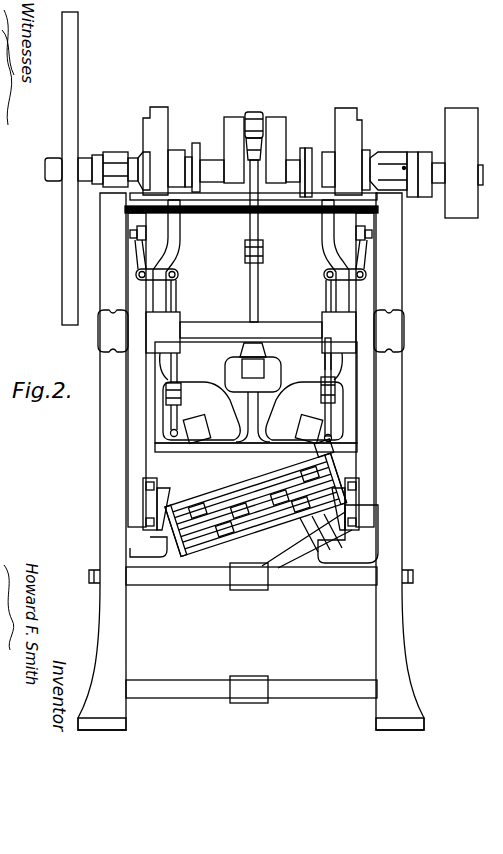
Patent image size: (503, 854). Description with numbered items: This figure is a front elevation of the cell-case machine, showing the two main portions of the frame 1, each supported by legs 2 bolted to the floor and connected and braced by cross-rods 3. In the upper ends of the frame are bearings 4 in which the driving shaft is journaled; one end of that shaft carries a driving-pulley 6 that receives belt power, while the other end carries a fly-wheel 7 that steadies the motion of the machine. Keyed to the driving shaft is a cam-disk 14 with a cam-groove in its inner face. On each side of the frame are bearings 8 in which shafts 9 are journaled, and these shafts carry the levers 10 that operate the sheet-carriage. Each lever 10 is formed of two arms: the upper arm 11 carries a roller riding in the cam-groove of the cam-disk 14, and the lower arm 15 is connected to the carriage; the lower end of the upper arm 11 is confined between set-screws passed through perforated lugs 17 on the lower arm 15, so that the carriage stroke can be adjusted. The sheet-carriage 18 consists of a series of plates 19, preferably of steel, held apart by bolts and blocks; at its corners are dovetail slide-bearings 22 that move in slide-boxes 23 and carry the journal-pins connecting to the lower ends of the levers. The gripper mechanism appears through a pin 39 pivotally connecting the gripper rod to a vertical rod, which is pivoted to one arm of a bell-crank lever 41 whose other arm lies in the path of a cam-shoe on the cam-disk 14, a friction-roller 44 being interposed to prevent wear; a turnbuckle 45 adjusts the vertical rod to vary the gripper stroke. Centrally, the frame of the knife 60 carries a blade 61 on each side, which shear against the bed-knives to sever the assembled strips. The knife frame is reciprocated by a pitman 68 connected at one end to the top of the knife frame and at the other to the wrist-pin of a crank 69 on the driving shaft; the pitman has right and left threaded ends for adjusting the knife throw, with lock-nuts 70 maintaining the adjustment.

The main portion of the frame 1 is at (251, 461).
The leg 2 is at (251, 685).
The cross-rod 3 is at (251, 457).
The bearing 4 is at (255, 164).
The driving-pulley 6 is at (449, 163).
The fly-wheel 7 is at (62, 146).
The bearing 8 is at (251, 331).
The shaft 9 is at (236, 330).
The lever 10 is at (251, 332).
The upper arm 11 is at (251, 256).
The cam-disk 14 is at (256, 152).
The lower arm 15 is at (254, 370).
The perforated lug 17 is at (254, 395).
The sheet-carriage 18 is at (256, 504).
The plate 19 is at (213, 552).
The slide-bearing 22 is at (157, 522).
The slide-box 23 is at (164, 495).
The pin 39 is at (332, 440).
The bell-crank lever 41 is at (251, 260).
The friction-roller 44 is at (130, 234).
The turnbuckle 45 is at (319, 387).
The frame of the knife 60 is at (256, 392).
The blade 61 is at (256, 458).
The pitman 68 is at (262, 241).
The crank 69 is at (255, 138).
The lock-nut 70 is at (249, 158).